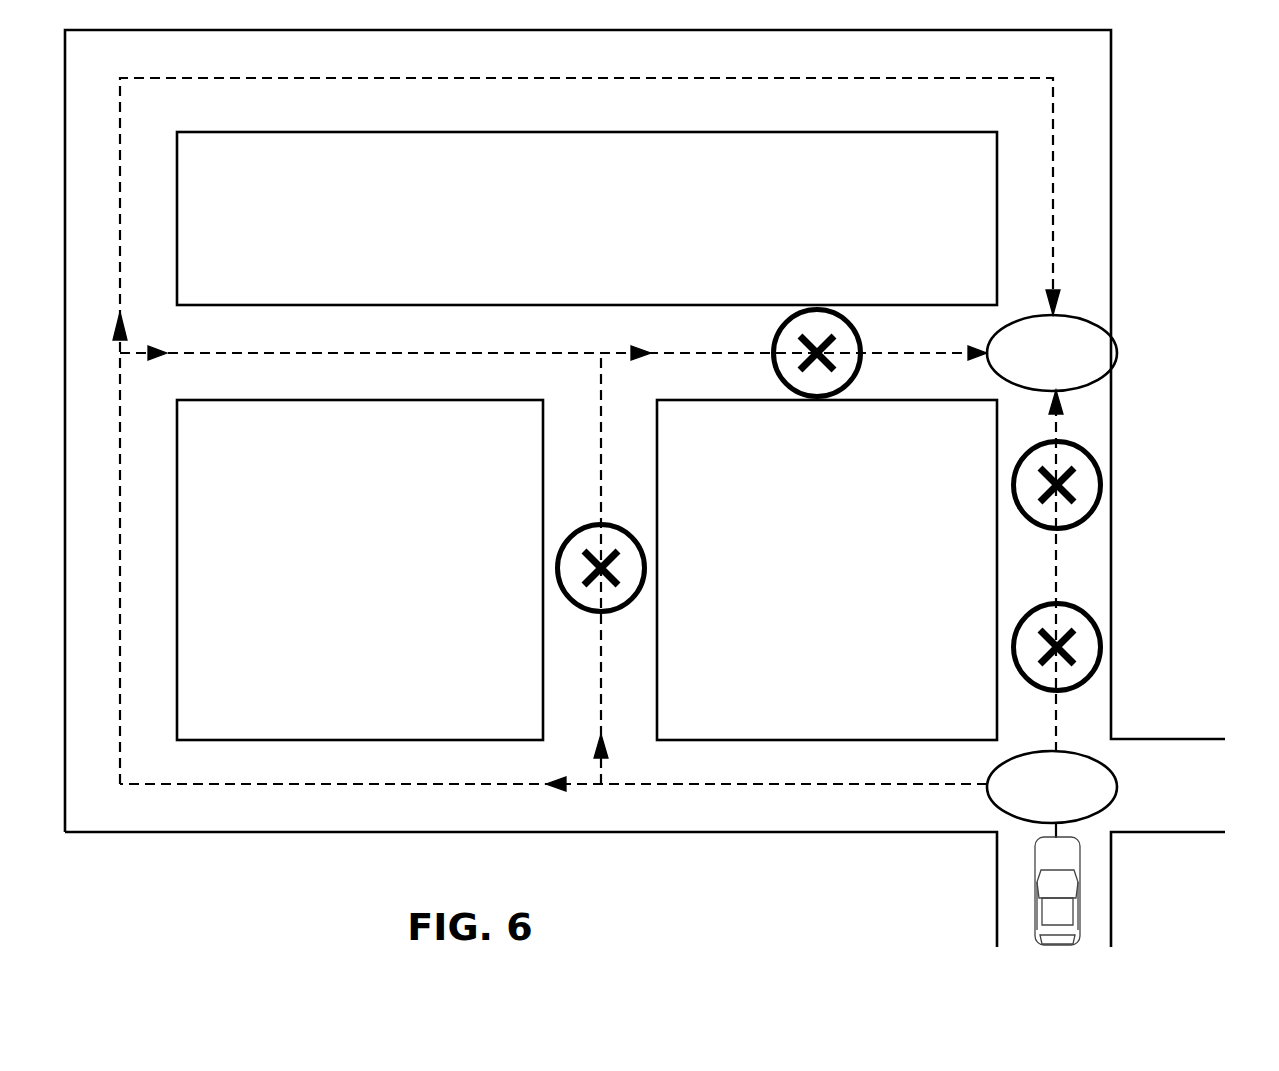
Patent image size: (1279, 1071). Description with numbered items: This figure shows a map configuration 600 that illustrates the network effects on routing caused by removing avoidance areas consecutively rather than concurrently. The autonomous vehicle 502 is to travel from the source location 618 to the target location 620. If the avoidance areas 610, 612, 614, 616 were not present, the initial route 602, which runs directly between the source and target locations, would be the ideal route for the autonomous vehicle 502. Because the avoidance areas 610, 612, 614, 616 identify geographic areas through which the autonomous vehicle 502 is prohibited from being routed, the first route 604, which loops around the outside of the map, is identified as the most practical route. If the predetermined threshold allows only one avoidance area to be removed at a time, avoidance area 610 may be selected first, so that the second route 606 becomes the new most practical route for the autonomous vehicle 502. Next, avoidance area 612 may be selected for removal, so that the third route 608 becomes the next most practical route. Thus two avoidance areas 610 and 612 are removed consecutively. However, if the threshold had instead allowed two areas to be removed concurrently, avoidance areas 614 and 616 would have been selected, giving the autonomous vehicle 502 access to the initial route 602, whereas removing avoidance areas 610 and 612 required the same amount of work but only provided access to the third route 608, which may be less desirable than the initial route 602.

The map configuration 600 is at (1160, 176).
The initial route 602 is at (1058, 568).
The first route 604 is at (977, 80).
The second route 606 is at (337, 353).
The third route 608 is at (601, 447).
The avoidance area 610 is at (805, 306).
The avoidance area 612 is at (561, 547).
The avoidance area 614 is at (1012, 483).
The avoidance area 616 is at (1012, 638).
The source location 618 is at (1113, 771).
The target location 620 is at (1100, 323).
The autonomous vehicle 502 is at (1079, 903).